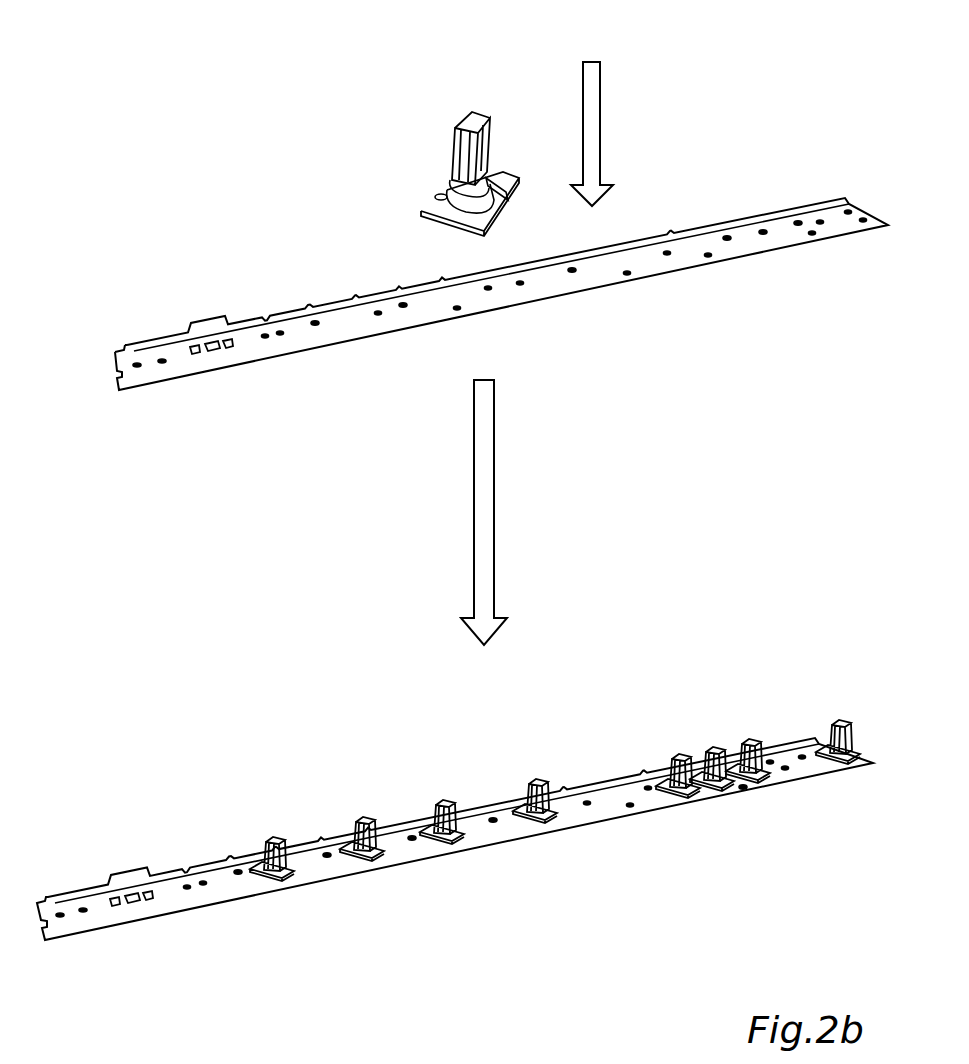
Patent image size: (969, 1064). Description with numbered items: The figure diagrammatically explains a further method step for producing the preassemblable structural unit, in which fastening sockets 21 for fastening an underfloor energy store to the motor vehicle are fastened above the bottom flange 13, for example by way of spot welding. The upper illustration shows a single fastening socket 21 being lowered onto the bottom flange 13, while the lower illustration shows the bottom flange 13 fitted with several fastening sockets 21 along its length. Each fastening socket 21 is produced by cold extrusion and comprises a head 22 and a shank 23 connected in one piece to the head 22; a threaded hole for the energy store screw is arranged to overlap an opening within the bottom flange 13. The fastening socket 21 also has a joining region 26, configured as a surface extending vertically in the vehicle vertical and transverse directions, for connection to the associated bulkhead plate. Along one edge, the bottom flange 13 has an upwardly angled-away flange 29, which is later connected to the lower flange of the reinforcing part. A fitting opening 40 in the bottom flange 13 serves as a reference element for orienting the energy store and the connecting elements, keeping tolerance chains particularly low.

The bottom flange 13 is at (692, 260).
The fastening socket 21 is at (565, 448).
The head 22 is at (500, 198).
The shank 23 is at (485, 143).
The joining region 26 is at (490, 170).
The upwardly angled-away flange 29 is at (615, 780).
The fitting opening 40 is at (303, 863).